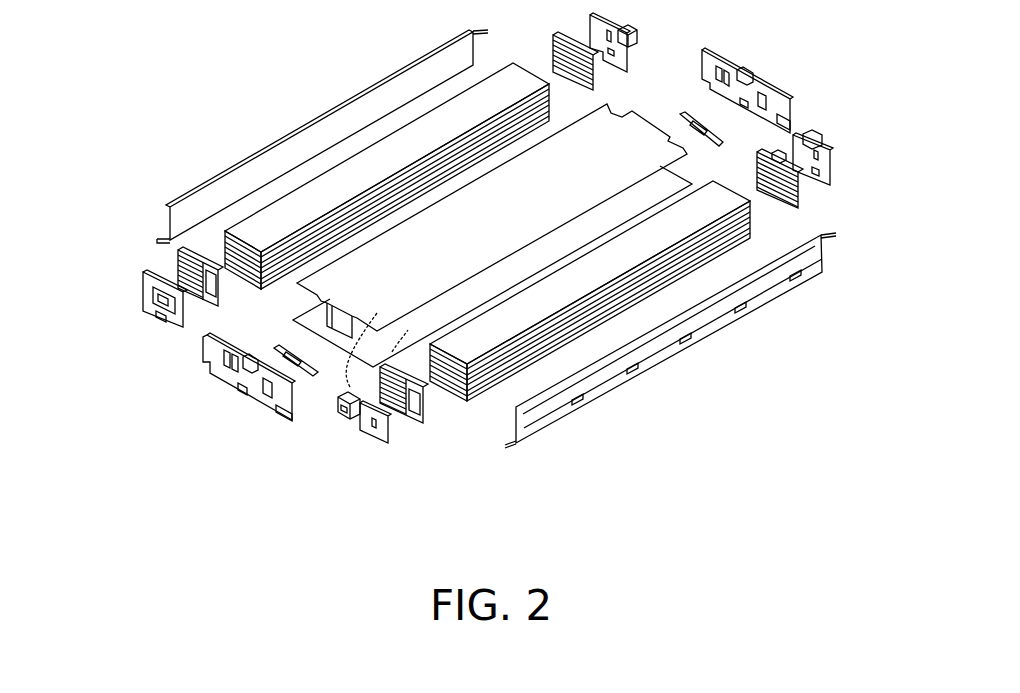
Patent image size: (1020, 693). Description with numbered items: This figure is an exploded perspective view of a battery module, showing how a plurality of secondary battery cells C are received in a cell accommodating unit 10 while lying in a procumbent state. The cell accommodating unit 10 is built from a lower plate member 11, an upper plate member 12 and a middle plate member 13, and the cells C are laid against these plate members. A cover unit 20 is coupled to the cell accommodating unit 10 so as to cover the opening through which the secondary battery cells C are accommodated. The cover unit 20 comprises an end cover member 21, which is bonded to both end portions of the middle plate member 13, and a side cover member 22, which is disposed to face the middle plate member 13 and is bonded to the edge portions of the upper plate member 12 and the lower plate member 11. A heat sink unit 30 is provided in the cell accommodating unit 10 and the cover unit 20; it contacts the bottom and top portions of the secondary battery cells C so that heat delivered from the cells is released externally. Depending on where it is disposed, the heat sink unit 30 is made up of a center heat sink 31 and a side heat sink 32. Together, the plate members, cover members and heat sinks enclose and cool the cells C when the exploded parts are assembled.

The cell accommodating unit 10 is at (372, 506).
The lower plate member 11 is at (390, 413).
The upper plate member 12 is at (350, 415).
The middle plate member 13 is at (370, 317).
The cover unit 20 is at (903, 122).
The end cover member 21 is at (777, 100).
The side cover member 22 is at (817, 233).
The heat sink unit 30 is at (133, 141).
The center heat sink 31 is at (317, 363).
The side heat sink 32 is at (157, 240).
The secondary battery cell C is at (453, 407).